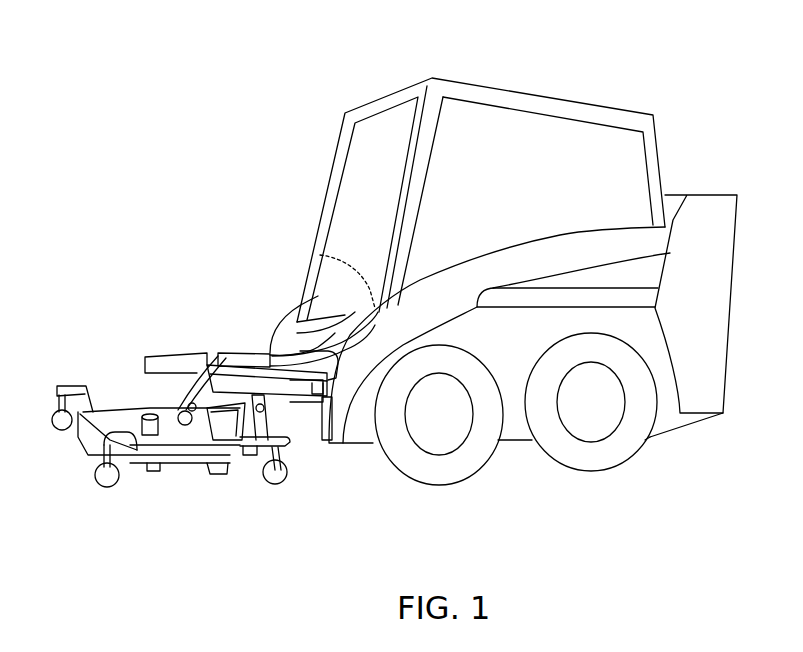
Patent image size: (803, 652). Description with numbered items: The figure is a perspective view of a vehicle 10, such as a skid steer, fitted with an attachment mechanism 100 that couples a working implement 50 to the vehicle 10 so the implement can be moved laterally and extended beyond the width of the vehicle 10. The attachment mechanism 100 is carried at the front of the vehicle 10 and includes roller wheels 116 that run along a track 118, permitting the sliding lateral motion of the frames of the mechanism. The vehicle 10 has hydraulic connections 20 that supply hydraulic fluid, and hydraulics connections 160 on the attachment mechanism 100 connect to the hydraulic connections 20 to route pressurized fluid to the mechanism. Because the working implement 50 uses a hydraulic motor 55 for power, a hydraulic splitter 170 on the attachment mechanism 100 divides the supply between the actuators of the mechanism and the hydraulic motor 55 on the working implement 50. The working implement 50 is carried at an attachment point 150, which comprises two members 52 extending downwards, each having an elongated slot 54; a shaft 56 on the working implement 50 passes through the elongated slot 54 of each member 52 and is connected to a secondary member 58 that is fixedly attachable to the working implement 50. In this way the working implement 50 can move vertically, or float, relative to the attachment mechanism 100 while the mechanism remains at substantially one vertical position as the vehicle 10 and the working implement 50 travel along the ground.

The vehicle 10 is at (574, 63).
The hydraulic connections 20 is at (305, 268).
The working implement 50 is at (73, 446).
The members 52 is at (155, 410).
The elongated slot 54 is at (265, 460).
The hydraulic motor 55 is at (120, 412).
The shaft 56 is at (262, 445).
The secondary member 58 is at (208, 470).
The attachment mechanism 100 is at (175, 298).
The roller wheels 116 is at (210, 353).
The track 118 is at (197, 353).
The attachment point 150 is at (279, 412).
The hydraulics connections 160 is at (347, 343).
The hydraulic splitter 170 is at (243, 350).